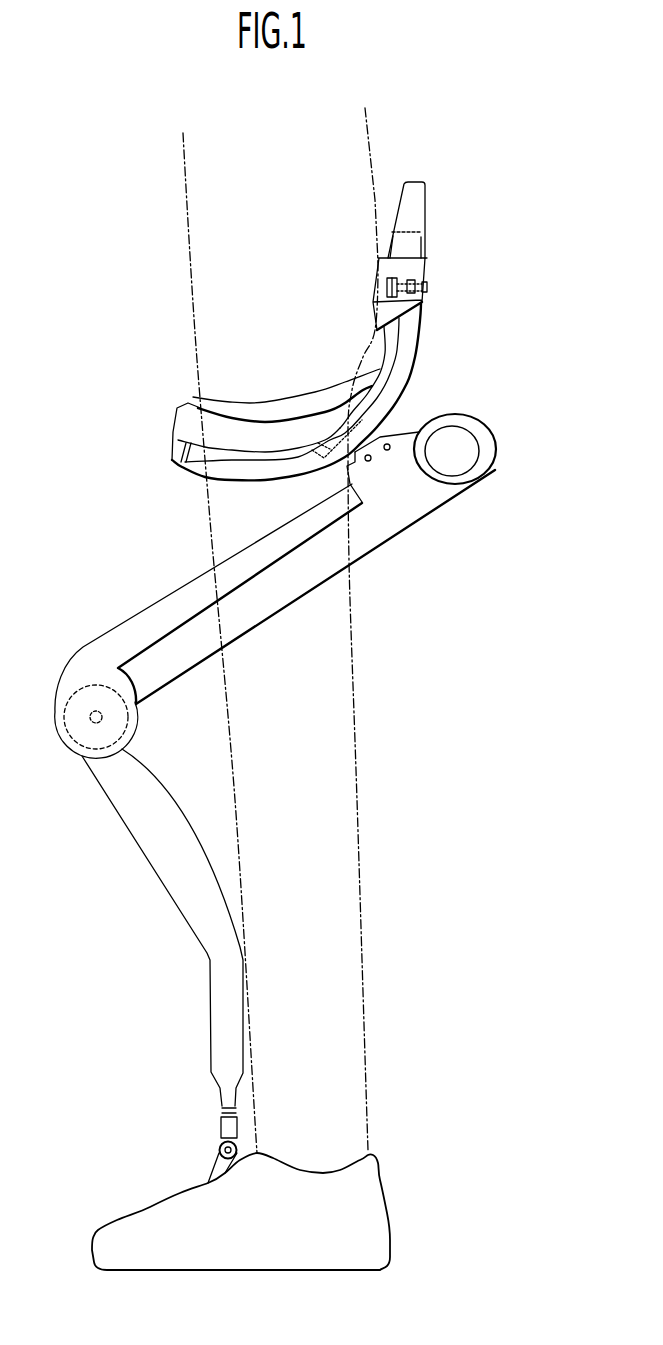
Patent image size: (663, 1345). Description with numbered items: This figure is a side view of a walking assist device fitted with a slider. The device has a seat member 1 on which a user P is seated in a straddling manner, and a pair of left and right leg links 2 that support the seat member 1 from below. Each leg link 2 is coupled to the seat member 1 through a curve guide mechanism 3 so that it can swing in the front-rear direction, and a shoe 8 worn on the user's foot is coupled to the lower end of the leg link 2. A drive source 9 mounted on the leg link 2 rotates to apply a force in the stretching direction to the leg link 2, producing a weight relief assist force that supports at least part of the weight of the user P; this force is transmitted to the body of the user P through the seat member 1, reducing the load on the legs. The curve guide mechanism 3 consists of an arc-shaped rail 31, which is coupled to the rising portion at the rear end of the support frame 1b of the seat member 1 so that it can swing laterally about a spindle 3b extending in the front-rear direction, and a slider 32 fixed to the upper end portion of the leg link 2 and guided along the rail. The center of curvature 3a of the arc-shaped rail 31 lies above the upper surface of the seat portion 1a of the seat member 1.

The user P is at (183, 183).
The seat member 1 is at (238, 382).
The seat portion 1a is at (335, 394).
The support frame 1b is at (175, 422).
The leg link 2 is at (68, 621).
The curve guide mechanism 3 is at (334, 415).
The center of curvature 3a is at (252, 310).
The spindle 3b is at (428, 288).
The arc-shaped rail 31 is at (418, 361).
The slider 32 is at (353, 455).
The shoe 8 is at (103, 1208).
The drive source 9 is at (482, 438).